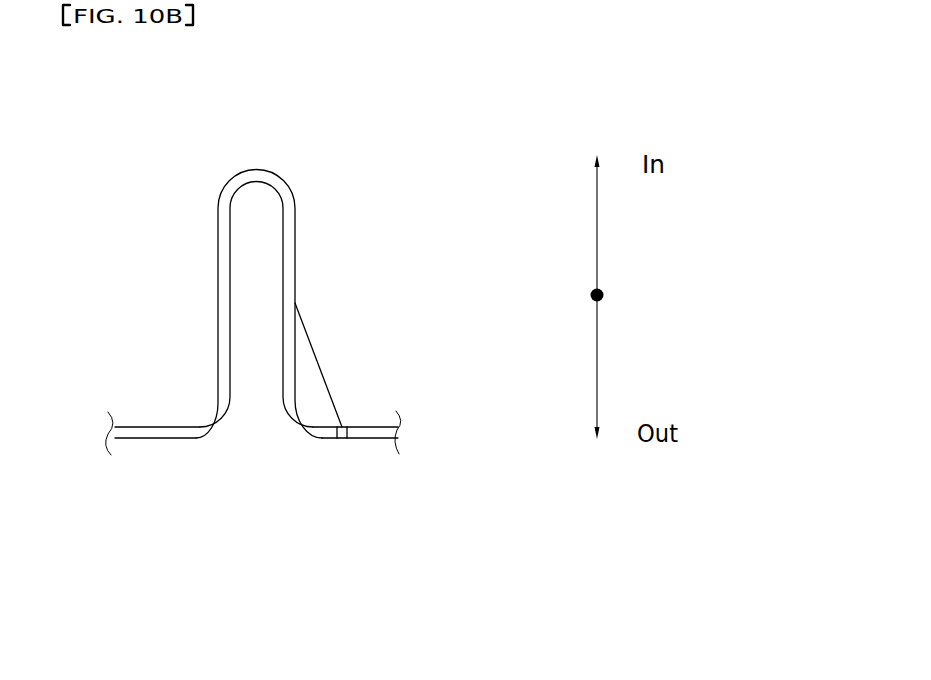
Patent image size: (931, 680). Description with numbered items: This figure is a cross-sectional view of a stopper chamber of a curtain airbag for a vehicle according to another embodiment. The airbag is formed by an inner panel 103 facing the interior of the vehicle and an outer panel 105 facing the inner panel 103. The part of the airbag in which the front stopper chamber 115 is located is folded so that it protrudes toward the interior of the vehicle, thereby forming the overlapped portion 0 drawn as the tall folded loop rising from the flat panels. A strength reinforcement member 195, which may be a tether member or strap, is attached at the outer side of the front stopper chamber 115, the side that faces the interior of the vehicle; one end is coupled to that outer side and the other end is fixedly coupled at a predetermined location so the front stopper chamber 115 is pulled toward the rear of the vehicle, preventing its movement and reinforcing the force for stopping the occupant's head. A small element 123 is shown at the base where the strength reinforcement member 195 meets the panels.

The overlapped portion 0 is at (309, 152).
The front stopper chamber 115 is at (311, 218).
The strength reinforcement member 195 is at (318, 362).
The outer panel 105 is at (370, 427).
The coupling portion 123 is at (340, 440).
The inner panel 103 is at (377, 440).